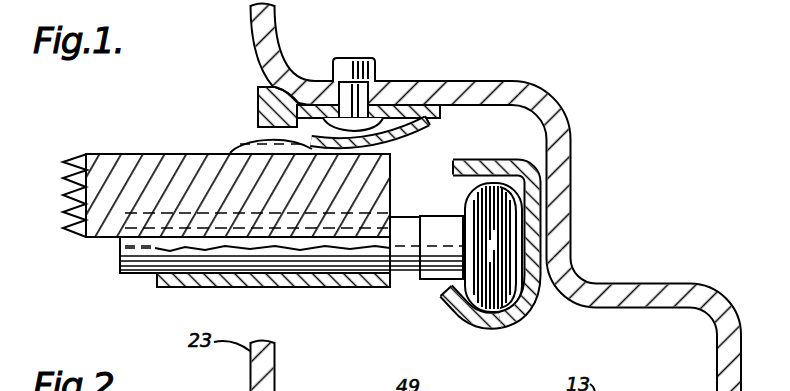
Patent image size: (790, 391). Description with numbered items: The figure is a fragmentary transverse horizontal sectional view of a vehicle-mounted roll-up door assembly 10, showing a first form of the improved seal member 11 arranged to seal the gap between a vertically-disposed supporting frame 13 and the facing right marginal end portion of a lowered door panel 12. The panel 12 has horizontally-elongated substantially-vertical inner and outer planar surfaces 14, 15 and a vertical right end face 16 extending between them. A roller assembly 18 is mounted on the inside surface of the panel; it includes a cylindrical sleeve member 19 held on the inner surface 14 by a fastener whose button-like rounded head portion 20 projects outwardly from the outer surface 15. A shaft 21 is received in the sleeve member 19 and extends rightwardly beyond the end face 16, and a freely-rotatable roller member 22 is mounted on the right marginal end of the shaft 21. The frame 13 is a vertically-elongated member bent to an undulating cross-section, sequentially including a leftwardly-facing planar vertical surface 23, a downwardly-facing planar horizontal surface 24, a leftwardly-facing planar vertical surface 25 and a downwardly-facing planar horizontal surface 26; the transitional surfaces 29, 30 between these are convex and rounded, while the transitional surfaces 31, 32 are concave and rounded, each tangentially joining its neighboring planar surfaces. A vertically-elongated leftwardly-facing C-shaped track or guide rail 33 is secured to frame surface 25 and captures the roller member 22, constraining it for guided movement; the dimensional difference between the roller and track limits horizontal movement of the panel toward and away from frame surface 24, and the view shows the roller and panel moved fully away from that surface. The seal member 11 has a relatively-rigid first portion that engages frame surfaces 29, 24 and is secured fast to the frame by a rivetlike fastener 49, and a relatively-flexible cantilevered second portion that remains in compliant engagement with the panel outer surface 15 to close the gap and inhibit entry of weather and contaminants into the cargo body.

The vehicle-mounted roll-up door assembly 10 is at (678, 96).
The seal member 11 is at (424, 136).
The door panel 12 is at (97, 146).
The frame 13 is at (560, 97).
The inner planar surface 14 is at (100, 243).
The outer planar surface 15 is at (136, 154).
The right end face 16 is at (391, 190).
The roller assembly 18 is at (408, 280).
The cylindrical sleeve member 19 is at (195, 289).
The fastener head portion 20 is at (245, 141).
The shaft 21 is at (126, 274).
The roller member 22 is at (540, 302).
The leftwardly-facing planar vertical surface 23 is at (250, 14).
The downwardly-facing planar horizontal surface 24 is at (446, 110).
The leftwardly-facing planar vertical surface 25 is at (548, 212).
The downwardly-facing planar horizontal surface 26 is at (628, 310).
The transitional surface 29 is at (258, 104).
The transitional surface 30 is at (563, 297).
The transitional surface 31 is at (530, 125).
The transitional surface 32 is at (690, 320).
The C-shaped track or guide rail 33 is at (462, 321).
The rivetlike fastener 49 is at (376, 66).